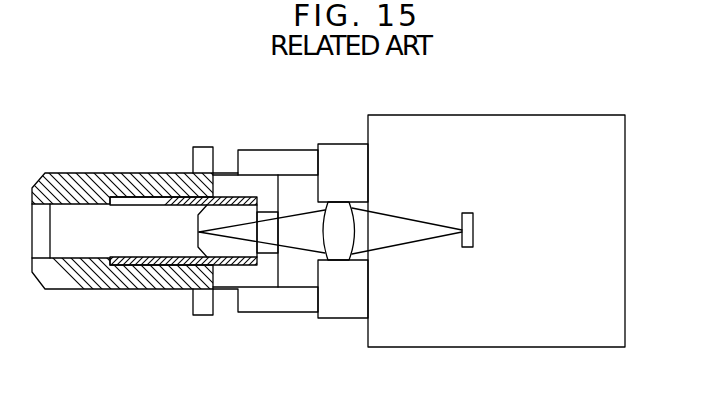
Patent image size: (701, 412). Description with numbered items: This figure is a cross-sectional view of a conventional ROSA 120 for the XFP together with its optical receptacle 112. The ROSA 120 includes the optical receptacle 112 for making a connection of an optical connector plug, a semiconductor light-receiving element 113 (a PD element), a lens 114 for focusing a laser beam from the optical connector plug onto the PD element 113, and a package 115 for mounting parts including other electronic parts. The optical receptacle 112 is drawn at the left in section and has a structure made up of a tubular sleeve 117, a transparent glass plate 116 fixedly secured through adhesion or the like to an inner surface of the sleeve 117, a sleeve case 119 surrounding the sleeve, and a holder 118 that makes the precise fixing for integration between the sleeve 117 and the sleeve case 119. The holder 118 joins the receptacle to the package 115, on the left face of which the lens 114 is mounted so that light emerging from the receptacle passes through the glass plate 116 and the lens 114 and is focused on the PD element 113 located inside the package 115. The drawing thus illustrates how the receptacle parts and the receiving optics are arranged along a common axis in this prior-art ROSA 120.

The optical receptacle 112 is at (153, 160).
The semiconductor light-receiving element 113 is at (468, 242).
The lens 114 is at (339, 238).
The package 115 is at (552, 347).
The transparent glass plate 116 is at (248, 247).
The tubular sleeve 117 is at (139, 262).
The holder 118 is at (225, 185).
The sleeve case 119 is at (91, 277).
The ROSA 120 is at (482, 110).